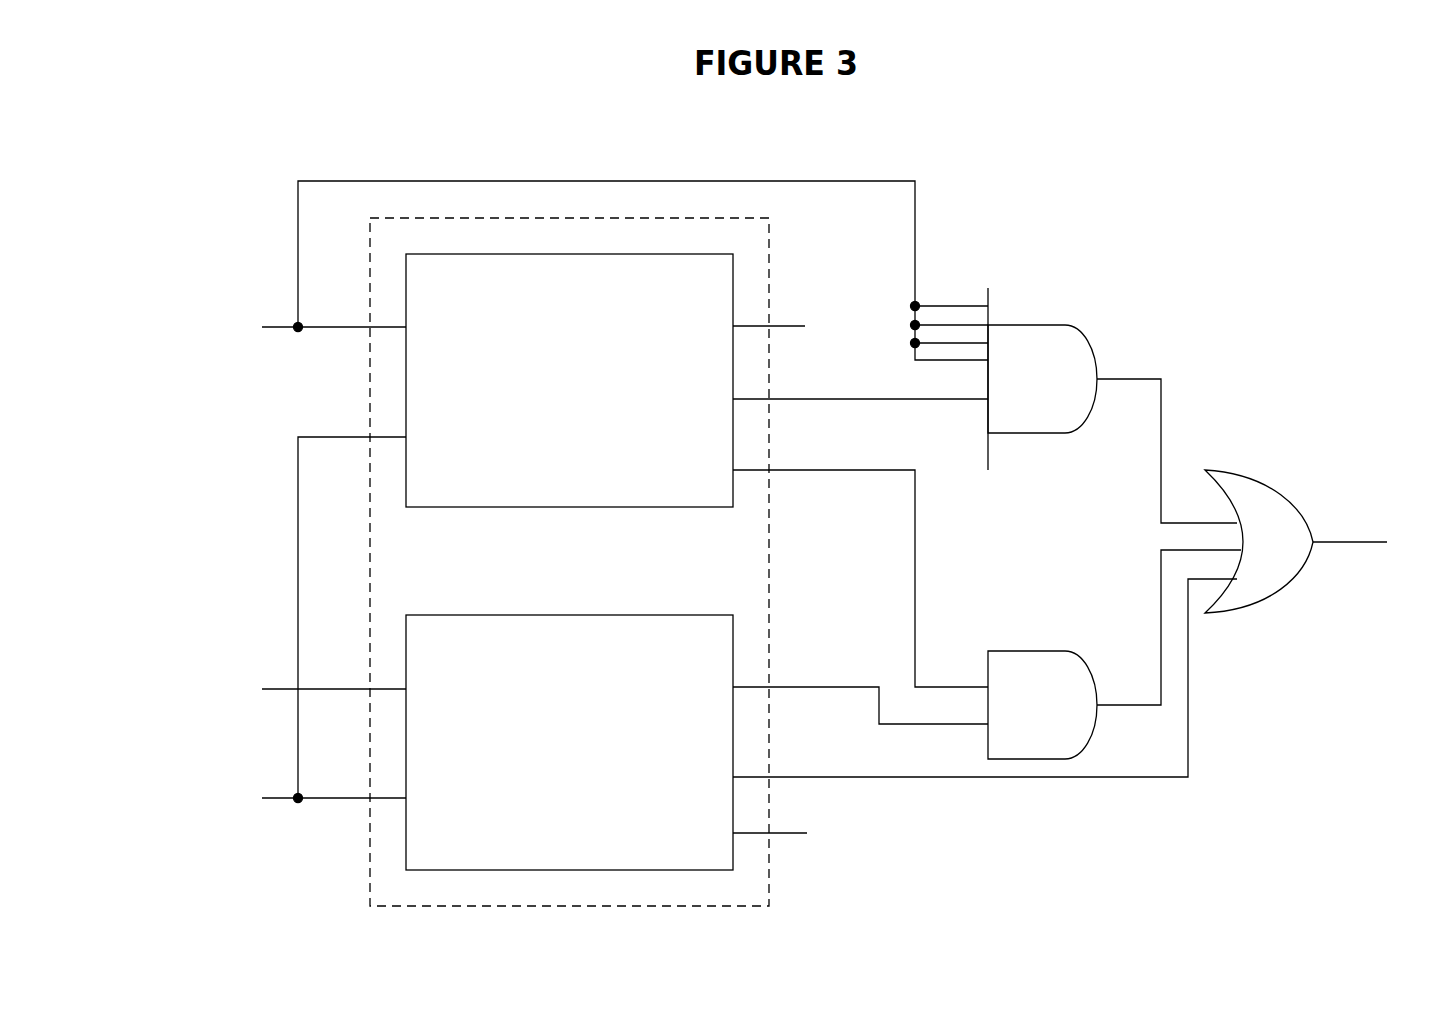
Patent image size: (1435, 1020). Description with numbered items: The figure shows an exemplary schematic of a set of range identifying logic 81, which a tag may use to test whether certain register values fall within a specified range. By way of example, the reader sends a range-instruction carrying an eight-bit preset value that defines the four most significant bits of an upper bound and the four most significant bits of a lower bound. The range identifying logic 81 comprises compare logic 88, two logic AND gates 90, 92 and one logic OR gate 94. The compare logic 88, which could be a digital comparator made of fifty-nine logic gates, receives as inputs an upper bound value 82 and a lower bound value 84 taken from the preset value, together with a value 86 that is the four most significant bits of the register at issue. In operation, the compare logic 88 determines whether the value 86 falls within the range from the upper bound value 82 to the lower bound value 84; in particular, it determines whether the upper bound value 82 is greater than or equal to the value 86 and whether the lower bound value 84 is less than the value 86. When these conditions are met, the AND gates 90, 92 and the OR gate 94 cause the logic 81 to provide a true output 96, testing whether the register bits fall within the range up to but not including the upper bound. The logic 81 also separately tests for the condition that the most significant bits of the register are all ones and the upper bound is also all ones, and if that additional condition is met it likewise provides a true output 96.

The range identifying logic 81 is at (1012, 136).
The upper bound value 82 is at (271, 321).
The lower bound value 84 is at (273, 689).
The value 86 is at (274, 798).
The compare logic 88 is at (573, 218).
The logic AND gate 90 is at (1040, 324).
The logic AND gate 92 is at (1042, 651).
The logic OR gate 94 is at (1278, 488).
The true output 96 is at (1371, 541).